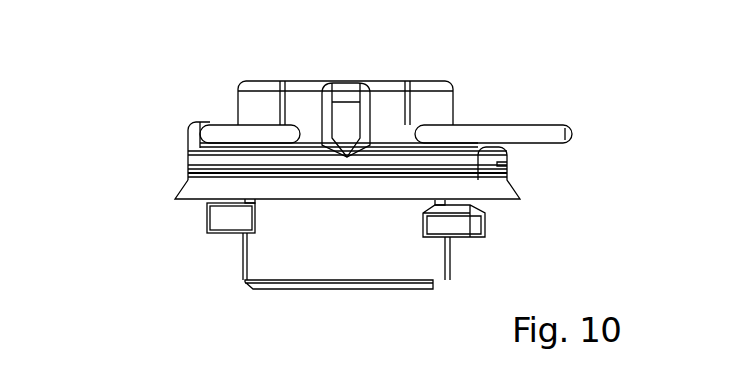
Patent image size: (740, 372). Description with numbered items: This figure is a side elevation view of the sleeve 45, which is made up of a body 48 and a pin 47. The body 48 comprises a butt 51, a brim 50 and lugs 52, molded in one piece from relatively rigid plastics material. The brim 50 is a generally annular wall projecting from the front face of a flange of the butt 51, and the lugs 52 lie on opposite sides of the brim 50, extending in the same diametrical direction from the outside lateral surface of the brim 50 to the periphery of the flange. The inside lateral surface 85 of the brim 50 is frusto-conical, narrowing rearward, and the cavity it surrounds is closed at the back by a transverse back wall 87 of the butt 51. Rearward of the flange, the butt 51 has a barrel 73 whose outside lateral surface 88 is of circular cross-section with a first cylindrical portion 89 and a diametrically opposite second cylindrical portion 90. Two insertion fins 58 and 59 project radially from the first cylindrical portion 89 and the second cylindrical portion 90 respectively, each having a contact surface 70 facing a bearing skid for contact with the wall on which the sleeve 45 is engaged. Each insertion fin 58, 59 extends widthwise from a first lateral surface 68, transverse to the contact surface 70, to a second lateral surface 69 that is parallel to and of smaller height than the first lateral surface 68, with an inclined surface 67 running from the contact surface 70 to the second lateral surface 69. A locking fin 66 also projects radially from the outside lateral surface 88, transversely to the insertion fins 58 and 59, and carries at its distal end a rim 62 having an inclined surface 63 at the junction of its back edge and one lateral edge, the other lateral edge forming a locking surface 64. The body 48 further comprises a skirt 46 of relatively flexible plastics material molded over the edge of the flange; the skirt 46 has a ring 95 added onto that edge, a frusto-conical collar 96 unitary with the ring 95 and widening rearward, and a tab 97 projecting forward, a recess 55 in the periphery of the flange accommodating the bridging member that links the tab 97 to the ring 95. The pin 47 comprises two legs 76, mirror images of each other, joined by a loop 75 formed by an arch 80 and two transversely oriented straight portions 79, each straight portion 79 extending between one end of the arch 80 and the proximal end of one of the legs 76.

The sleeve 45 is at (100, 43).
The skirt 46 is at (564, 198).
The pin 47 is at (596, 150).
The body 48 is at (522, 260).
The brim 50 is at (393, 98).
The butt 51 is at (270, 268).
The lugs 52 is at (348, 90).
The recess 55 is at (185, 143).
The insertion fin 58 is at (482, 222).
The insertion fin 59 is at (215, 222).
The rim 62 is at (335, 208).
The inclined surface 63 is at (440, 236).
The locking surface 64 is at (291, 213).
The locking fin 66 is at (312, 208).
The inclined surface 67 is at (441, 233).
The first lateral surface 68 is at (228, 230).
The second lateral surface 69 is at (460, 224).
The contact surface 70 is at (222, 194).
The barrel 73 is at (285, 268).
The loop 75 is at (528, 137).
The legs 76 is at (222, 127).
The straight portions 79 is at (425, 120).
The arch 80 is at (574, 133).
The inside lateral surface 85 is at (309, 80).
The back wall 87 is at (366, 212).
The outside lateral surface 88 is at (261, 261).
The first cylindrical portion 89 is at (420, 212).
The second cylindrical portion 90 is at (290, 200).
The ring 95 is at (185, 166).
The collar 96 is at (508, 188).
The tab 97 is at (192, 128).